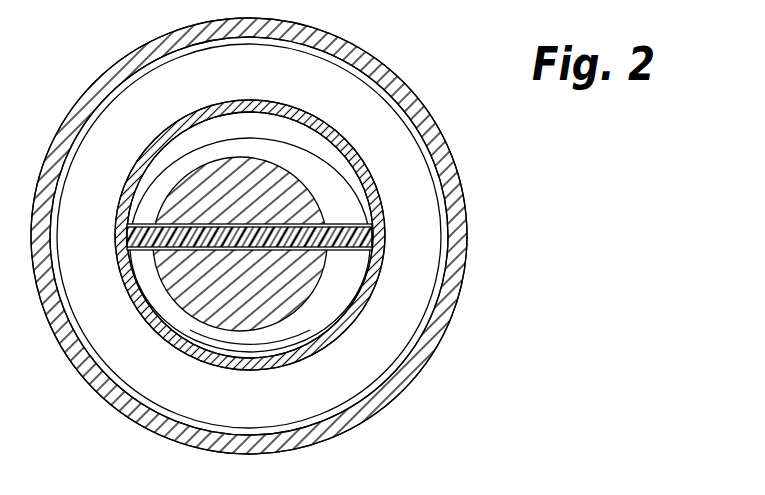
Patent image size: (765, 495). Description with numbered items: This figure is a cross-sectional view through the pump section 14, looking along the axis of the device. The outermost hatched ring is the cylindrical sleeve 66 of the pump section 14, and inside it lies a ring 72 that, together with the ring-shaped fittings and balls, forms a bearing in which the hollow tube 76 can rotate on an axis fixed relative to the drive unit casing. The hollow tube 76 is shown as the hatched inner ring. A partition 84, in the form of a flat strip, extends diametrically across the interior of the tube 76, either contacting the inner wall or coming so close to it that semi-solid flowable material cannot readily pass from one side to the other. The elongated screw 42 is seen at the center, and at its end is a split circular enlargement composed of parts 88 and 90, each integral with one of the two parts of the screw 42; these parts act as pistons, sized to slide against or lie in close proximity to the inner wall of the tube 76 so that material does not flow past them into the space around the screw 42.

The pump section 14 is at (304, 236).
The screw 42 is at (307, 298).
The sleeve 66 is at (465, 216).
The ring 72 is at (413, 202).
The hollow tube 76 is at (340, 139).
The partition 84 is at (350, 235).
The enlargement part 88 is at (267, 128).
The enlargement part 90 is at (247, 345).